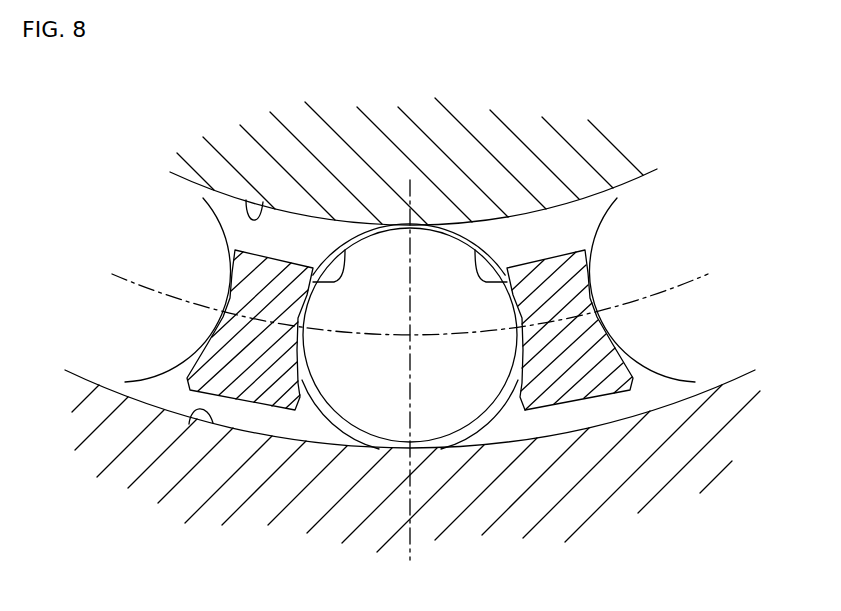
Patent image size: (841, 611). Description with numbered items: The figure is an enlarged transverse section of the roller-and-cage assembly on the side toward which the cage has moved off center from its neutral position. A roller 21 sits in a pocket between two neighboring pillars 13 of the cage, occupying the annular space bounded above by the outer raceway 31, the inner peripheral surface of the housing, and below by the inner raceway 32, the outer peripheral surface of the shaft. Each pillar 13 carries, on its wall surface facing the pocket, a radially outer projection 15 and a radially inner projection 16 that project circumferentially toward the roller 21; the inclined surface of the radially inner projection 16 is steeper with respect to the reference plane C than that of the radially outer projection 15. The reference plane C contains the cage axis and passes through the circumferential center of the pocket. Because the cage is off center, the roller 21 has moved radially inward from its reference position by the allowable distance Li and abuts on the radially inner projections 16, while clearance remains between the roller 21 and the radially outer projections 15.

The pillar 13 is at (247, 388).
The radially outer projection 15 is at (302, 402).
The radially inner projection 16 is at (345, 250).
The roller 21 is at (392, 256).
The outer raceway 31 is at (192, 420).
The inner raceway 32 is at (258, 213).
The reference plane C is at (409, 384).
The allowable distance Li is at (410, 334).